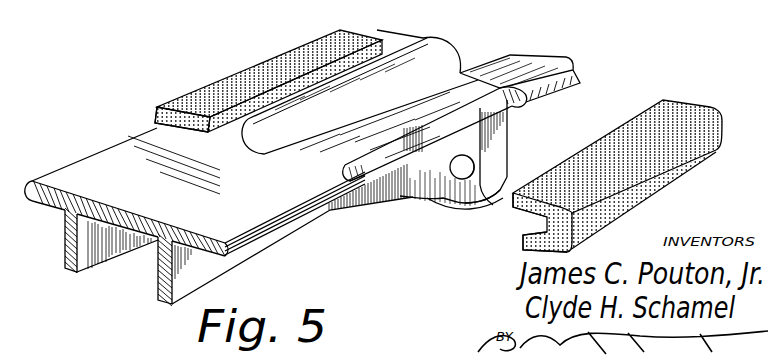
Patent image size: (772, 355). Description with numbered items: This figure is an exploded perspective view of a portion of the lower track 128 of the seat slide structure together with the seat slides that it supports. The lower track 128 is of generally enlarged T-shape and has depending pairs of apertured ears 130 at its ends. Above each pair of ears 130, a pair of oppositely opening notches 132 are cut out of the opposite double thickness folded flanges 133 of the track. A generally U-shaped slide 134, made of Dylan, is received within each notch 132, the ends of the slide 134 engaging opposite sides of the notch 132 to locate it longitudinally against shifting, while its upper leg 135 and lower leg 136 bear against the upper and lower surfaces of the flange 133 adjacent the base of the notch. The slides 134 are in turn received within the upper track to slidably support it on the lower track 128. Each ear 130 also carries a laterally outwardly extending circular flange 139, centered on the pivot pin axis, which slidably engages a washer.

The lower track 128 is at (122, 168).
The apertured ears 130 is at (427, 190).
The notches 132 is at (467, 117).
The double thickness folded flanges 133 is at (67, 167).
The slide 134 is at (270, 63).
The upper leg 135 is at (208, 103).
The lower leg 136 is at (530, 242).
The circular flange 139 is at (486, 206).